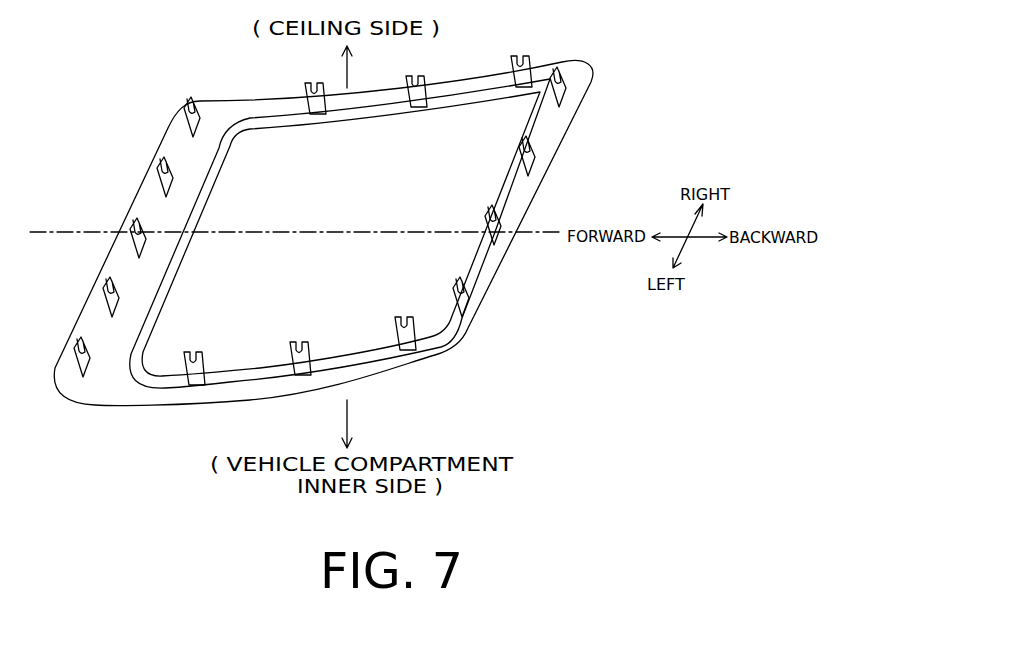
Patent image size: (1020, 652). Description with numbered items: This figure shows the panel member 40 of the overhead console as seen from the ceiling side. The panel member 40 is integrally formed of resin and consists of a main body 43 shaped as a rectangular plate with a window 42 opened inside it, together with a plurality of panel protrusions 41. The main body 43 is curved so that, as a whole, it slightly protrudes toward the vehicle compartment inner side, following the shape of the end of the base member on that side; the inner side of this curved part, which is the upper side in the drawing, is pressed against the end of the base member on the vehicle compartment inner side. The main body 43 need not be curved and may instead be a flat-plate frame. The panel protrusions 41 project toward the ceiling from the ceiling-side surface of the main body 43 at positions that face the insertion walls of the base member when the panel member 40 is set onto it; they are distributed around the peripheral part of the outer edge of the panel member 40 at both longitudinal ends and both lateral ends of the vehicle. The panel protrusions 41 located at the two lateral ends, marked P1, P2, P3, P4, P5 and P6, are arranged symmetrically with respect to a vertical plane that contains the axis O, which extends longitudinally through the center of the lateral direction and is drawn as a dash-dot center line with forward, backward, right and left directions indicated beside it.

The panel member 40 is at (367, 228).
The panel protrusions 41 is at (345, 233).
The window 42 is at (500, 185).
The main body 43 is at (565, 120).
The position of panel protrusion P1 is at (303, 110).
The position of panel protrusion P2 is at (410, 108).
The position of panel protrusion P3 is at (512, 86).
The position of panel protrusion P4 is at (198, 352).
The position of panel protrusion P5 is at (304, 342).
The position of panel protrusion P6 is at (410, 318).
The axis O is at (58, 228).